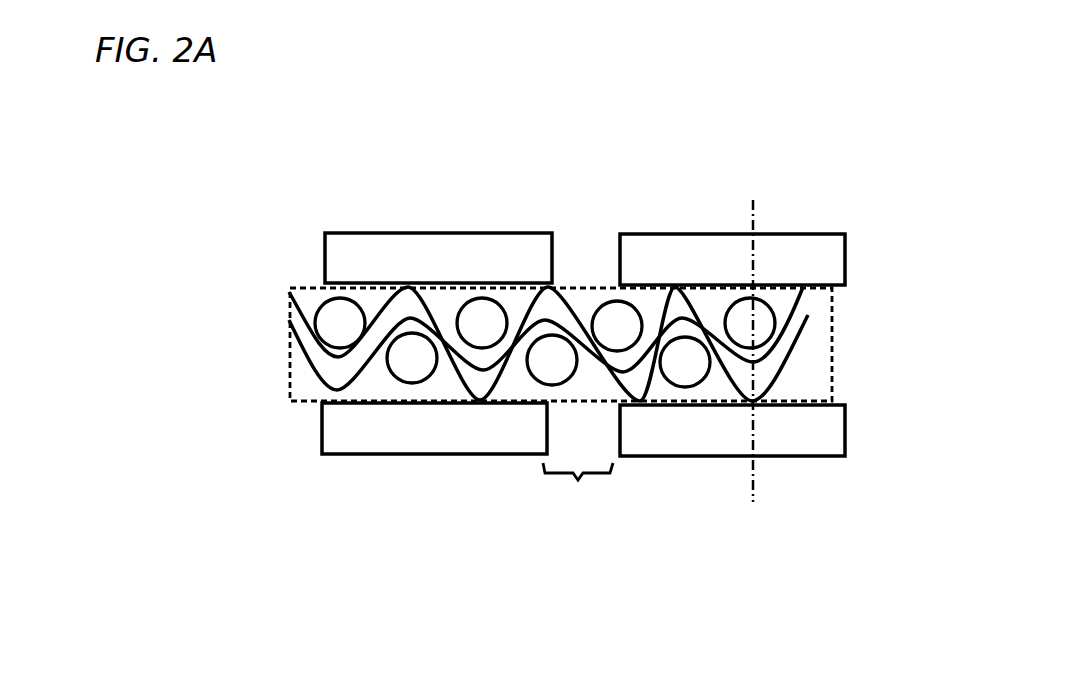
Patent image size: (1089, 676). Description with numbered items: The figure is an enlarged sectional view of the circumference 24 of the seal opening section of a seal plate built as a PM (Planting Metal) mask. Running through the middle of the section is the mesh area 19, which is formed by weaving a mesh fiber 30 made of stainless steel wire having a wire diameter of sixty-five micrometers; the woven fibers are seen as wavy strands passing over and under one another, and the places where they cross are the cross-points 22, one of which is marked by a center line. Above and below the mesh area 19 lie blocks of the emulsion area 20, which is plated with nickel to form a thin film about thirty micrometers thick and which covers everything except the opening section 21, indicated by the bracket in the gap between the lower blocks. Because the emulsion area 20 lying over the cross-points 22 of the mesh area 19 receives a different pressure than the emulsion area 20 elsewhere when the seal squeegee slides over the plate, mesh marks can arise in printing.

The mesh area 19 is at (833, 352).
The emulsion area 20 is at (412, 243).
The opening section 21 is at (580, 490).
The cross-points 22 is at (765, 503).
The circumference of the seal opening section 24 is at (255, 219).
The mesh fiber 30 is at (332, 325).